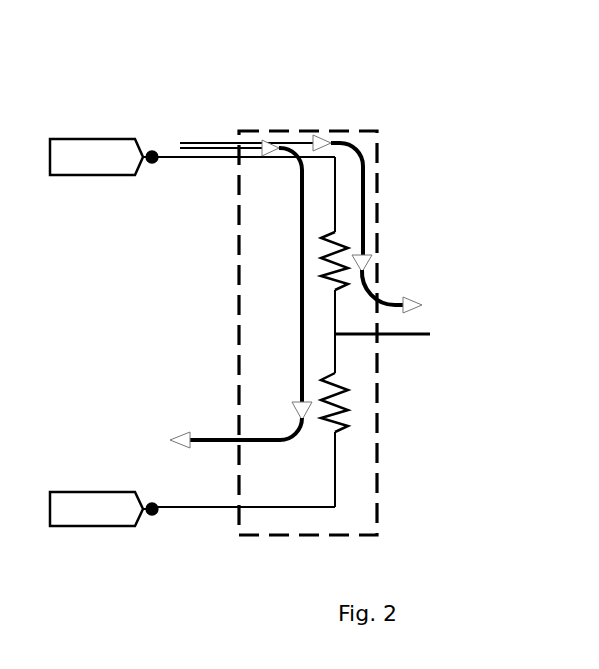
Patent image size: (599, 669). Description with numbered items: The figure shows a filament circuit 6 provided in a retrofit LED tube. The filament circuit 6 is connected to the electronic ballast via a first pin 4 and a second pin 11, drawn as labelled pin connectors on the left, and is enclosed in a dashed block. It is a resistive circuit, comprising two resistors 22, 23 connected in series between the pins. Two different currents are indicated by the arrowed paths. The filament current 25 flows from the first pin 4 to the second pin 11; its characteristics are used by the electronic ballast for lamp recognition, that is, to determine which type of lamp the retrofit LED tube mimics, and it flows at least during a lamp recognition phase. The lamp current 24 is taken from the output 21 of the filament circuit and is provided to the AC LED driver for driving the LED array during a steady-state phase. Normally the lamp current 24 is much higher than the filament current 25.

The first pin 4 is at (107, 135).
The second pin 11 is at (76, 483).
The filament circuit 6 is at (367, 128).
The output of the filament circuit 21 is at (412, 326).
The resistor 22 is at (322, 250).
The resistor 23 is at (355, 418).
The lamp current 24 is at (366, 208).
The filament current 25 is at (300, 328).